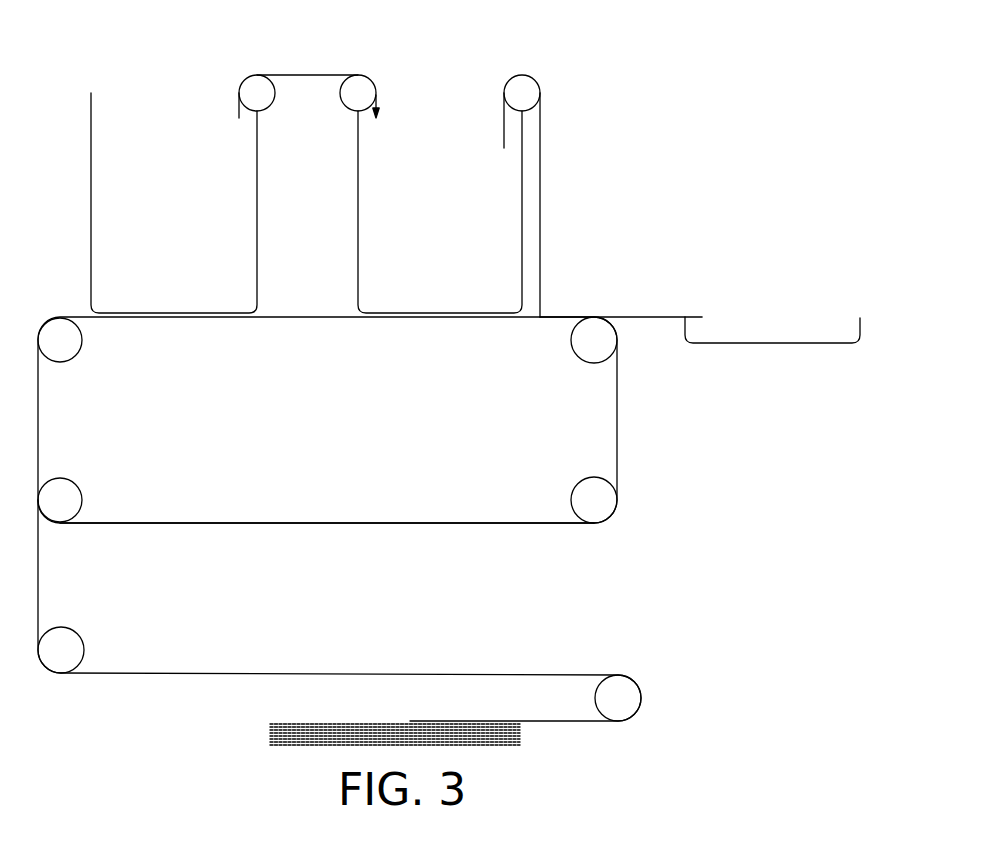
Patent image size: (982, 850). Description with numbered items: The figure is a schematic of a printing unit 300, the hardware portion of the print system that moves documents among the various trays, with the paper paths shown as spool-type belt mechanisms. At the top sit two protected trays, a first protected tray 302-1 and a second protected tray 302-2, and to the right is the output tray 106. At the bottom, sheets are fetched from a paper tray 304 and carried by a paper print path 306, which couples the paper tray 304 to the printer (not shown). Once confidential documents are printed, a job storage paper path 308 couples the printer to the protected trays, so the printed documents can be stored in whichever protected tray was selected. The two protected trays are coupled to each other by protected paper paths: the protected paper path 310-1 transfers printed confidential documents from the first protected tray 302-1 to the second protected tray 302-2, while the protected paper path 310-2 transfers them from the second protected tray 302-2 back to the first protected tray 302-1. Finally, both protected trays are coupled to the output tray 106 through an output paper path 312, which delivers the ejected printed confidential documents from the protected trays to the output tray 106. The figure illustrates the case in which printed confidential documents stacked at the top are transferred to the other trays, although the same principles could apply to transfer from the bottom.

The printing unit 300 is at (594, 51).
The first protected tray 302-1 is at (174, 203).
The second protected tray 302-2 is at (449, 196).
The protected paper path 310-1 is at (310, 62).
The output paper path 312 is at (630, 297).
The output tray 106 is at (772, 327).
The job storage paper path 308 is at (302, 330).
The protected paper path 310-2 is at (303, 511).
The paper print path 306 is at (305, 664).
The paper tray 304 is at (395, 721).